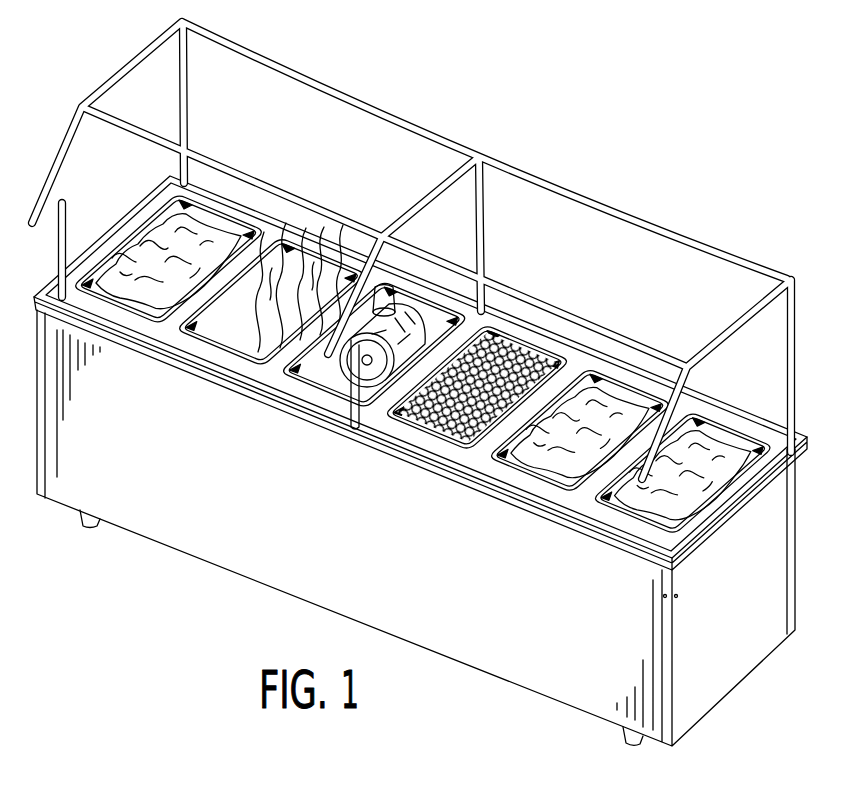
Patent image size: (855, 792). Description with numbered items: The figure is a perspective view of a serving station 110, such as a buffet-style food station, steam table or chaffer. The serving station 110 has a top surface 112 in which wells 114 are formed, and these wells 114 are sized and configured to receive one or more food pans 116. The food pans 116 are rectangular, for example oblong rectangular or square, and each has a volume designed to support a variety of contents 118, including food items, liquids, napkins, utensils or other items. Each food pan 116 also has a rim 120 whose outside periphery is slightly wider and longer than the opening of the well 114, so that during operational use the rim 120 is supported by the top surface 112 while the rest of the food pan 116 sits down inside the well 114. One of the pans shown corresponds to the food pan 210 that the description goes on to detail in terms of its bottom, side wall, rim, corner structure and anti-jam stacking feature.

The serving station 110 is at (419, 383).
The top surface 112 is at (576, 509).
The wells 114 is at (320, 265).
The food pans 116 is at (388, 380).
The contents 118 is at (488, 365).
The rim 120 is at (212, 208).
The food pan 210 is at (627, 520).